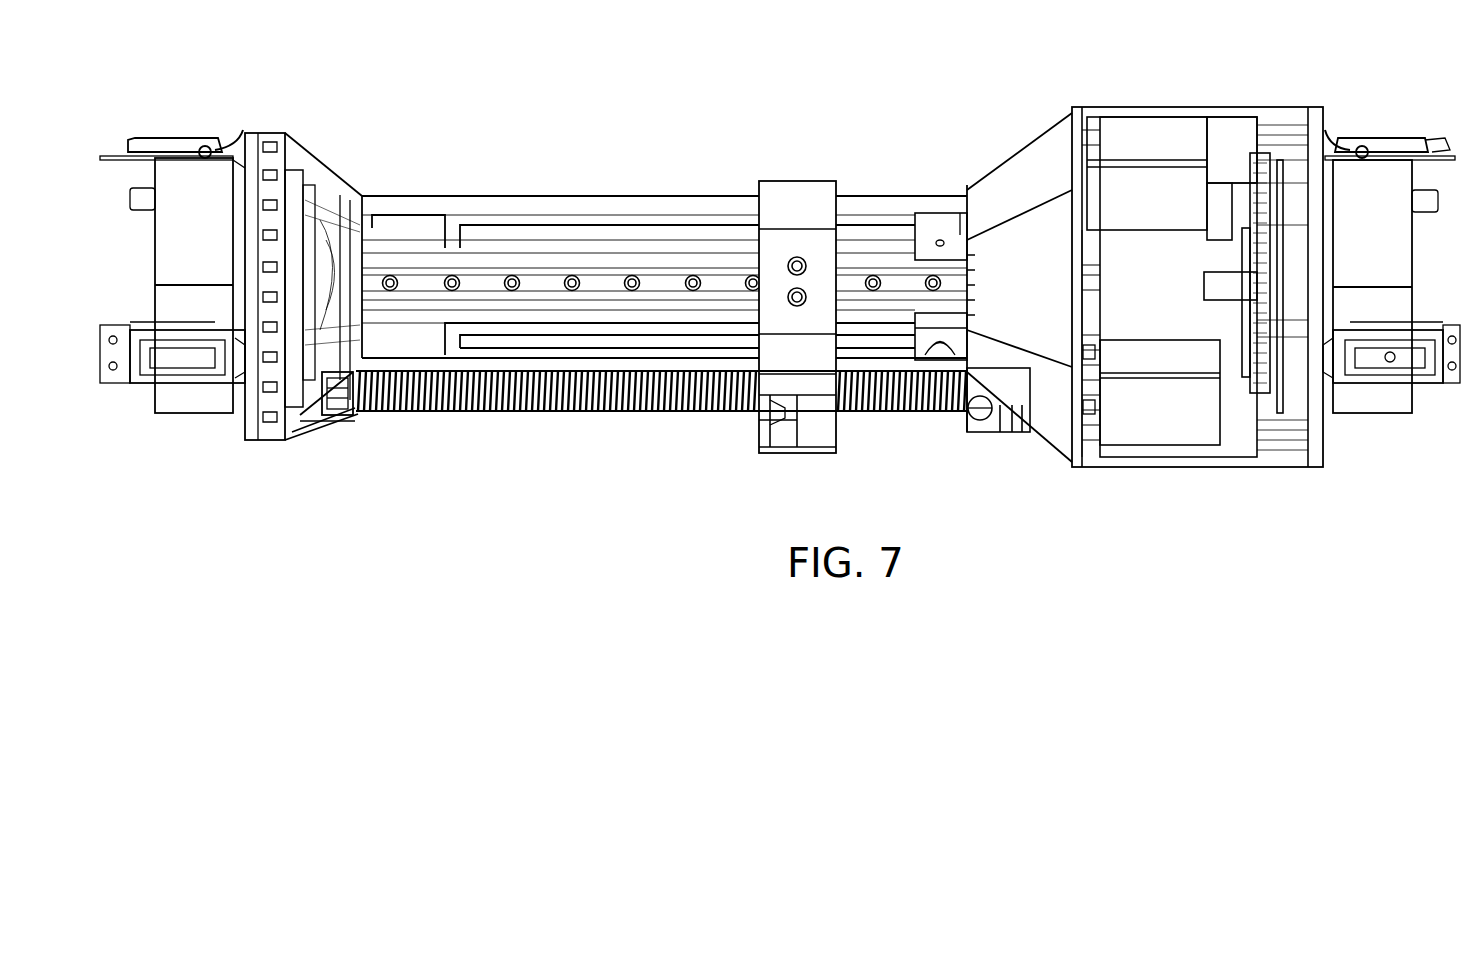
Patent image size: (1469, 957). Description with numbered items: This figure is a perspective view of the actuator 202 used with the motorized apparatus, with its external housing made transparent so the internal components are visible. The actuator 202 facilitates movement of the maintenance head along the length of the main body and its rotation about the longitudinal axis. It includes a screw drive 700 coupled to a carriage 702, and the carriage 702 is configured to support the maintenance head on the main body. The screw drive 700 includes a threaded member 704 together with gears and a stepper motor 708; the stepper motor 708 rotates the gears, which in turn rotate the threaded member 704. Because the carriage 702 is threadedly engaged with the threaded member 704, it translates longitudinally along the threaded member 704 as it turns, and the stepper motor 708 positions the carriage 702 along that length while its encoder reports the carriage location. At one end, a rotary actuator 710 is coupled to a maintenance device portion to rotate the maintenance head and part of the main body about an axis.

The actuator 202 is at (1197, 277).
The screw drive 700 is at (899, 418).
The carriage 702 is at (794, 192).
The threaded member 704 is at (545, 413).
The stepper motor 708 is at (1155, 432).
The rotary actuator 710 is at (1333, 425).